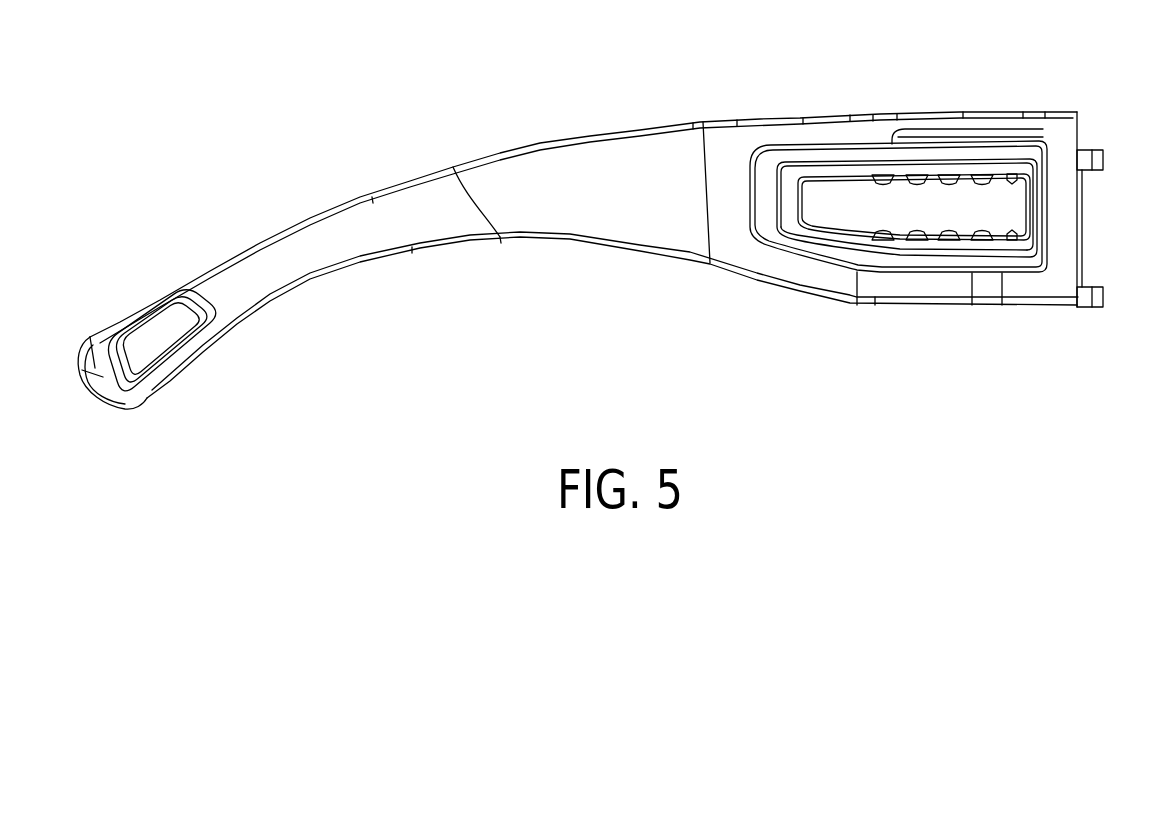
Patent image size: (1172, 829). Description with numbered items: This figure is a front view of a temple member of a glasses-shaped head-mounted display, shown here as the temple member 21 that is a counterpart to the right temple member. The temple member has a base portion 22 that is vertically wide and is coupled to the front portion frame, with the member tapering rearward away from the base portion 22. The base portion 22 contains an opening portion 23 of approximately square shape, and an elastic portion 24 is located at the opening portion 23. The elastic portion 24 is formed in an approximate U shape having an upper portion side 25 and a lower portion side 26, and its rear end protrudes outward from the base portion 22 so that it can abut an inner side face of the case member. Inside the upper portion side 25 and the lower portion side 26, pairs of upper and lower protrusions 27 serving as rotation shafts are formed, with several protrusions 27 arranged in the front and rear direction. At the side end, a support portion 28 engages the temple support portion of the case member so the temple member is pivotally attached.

The left temple member 21 is at (588, 157).
The base portion 22 is at (724, 138).
The opening portion 23 is at (752, 230).
The elastic portion 24 is at (833, 165).
The upper portion side 25 is at (964, 165).
The lower portion side 26 is at (897, 250).
The protrusions 27 is at (883, 230).
The support portion 28 is at (1103, 160).